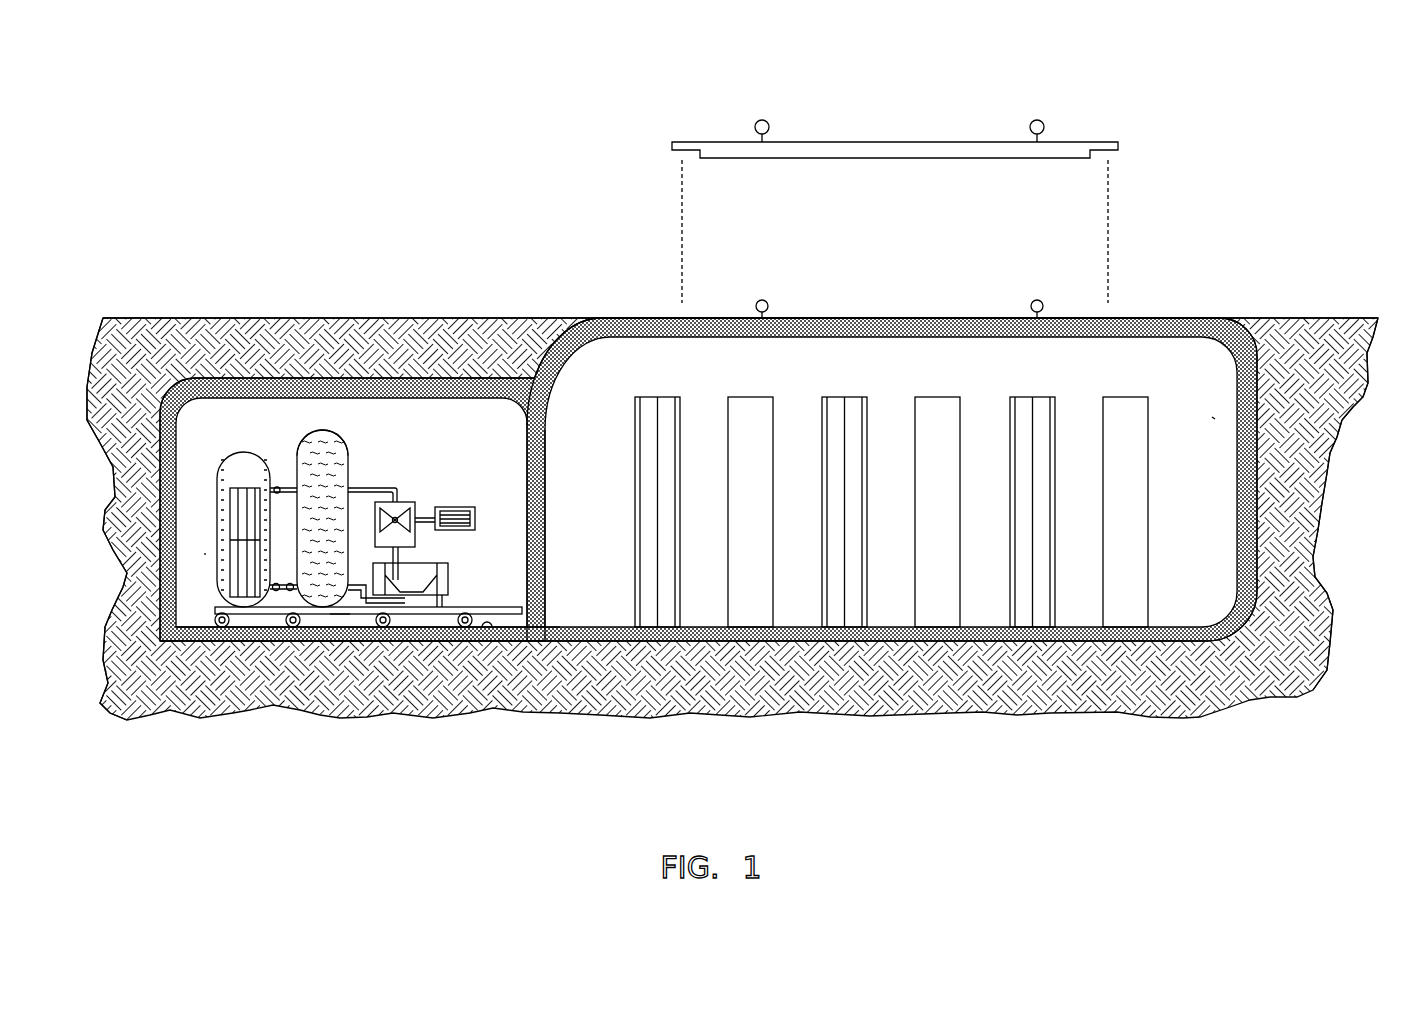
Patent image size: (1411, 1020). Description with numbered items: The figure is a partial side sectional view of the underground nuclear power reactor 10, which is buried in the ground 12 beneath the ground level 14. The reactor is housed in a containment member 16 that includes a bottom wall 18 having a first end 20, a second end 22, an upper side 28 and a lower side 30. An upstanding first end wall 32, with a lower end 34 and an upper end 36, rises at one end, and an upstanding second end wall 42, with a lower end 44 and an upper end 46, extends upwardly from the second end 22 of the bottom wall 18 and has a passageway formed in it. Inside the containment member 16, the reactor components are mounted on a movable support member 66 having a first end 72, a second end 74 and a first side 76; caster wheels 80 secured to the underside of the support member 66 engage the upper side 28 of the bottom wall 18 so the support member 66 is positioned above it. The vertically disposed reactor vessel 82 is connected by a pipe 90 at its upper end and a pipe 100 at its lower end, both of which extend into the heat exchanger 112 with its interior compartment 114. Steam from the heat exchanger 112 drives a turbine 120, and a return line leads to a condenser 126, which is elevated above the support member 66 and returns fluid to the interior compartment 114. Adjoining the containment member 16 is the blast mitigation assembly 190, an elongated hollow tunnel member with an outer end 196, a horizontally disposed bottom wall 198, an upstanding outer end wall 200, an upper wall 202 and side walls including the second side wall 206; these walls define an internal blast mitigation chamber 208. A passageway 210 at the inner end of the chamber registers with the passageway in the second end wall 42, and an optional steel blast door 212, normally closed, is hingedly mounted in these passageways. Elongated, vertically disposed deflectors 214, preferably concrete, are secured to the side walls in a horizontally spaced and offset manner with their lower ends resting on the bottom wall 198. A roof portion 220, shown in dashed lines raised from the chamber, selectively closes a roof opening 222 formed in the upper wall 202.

The underground nuclear power reactor 10 is at (205, 553).
The ground 12 is at (490, 328).
The ground level 14 is at (347, 318).
The containment member 16 is at (207, 360).
The bottom wall 18 is at (340, 633).
The first end 20 is at (185, 635).
The second end 22 is at (530, 633).
The upper side 28 is at (493, 630).
The lower side 30 is at (340, 630).
The first end wall 32 is at (147, 500).
The lower end 34 is at (165, 633).
The upper end 36 is at (170, 413).
The second end wall 42 is at (524, 420).
The lower end 44 is at (543, 633).
The upper end 46 is at (527, 423).
The movable support member 66 is at (440, 627).
The first end 72 is at (215, 610).
The second end 74 is at (553, 637).
The first side 76 is at (250, 640).
The caster wheels 80 is at (477, 607).
The reactor vessel 82 is at (222, 443).
The pipe 90 is at (283, 486).
The pipe 100 is at (287, 592).
The heat exchanger 112 is at (347, 442).
The interior compartment 114 is at (308, 433).
The turbine 120 is at (412, 510).
The condenser 126 is at (437, 557).
The blast mitigation assembly 190 is at (1183, 268).
The outer end 196 is at (1330, 427).
The bottom wall 198 is at (977, 643).
The outer end wall 200 is at (1237, 565).
The upper wall 202 is at (1180, 317).
The second side wall 206 is at (950, 374).
The blast mitigation chamber 208 is at (1212, 417).
The passageway 210 is at (550, 430).
The blast door 212 is at (537, 490).
The deflectors 214 is at (668, 392).
The roof portion 220 is at (925, 147).
The roof opening 222 is at (923, 320).